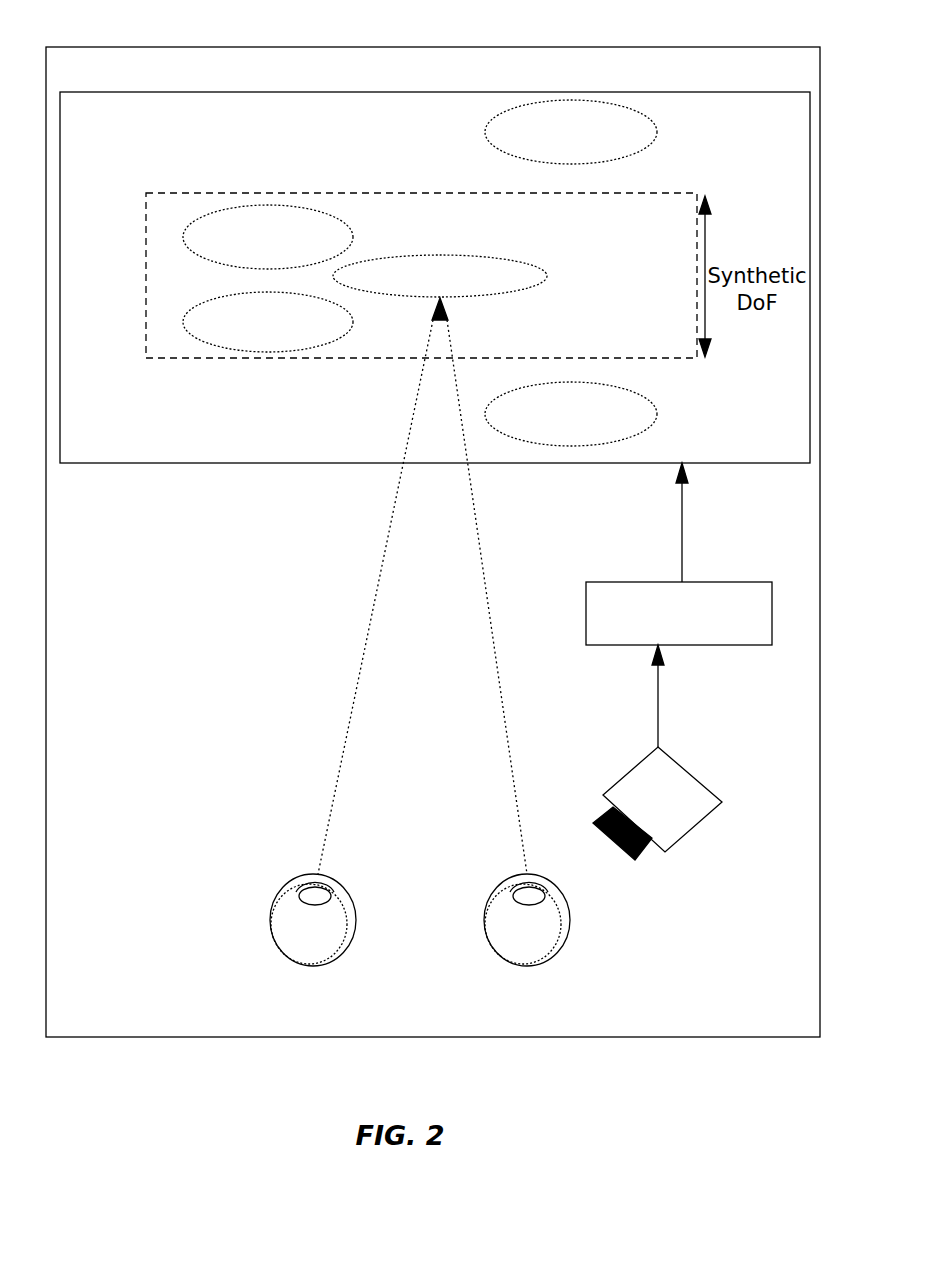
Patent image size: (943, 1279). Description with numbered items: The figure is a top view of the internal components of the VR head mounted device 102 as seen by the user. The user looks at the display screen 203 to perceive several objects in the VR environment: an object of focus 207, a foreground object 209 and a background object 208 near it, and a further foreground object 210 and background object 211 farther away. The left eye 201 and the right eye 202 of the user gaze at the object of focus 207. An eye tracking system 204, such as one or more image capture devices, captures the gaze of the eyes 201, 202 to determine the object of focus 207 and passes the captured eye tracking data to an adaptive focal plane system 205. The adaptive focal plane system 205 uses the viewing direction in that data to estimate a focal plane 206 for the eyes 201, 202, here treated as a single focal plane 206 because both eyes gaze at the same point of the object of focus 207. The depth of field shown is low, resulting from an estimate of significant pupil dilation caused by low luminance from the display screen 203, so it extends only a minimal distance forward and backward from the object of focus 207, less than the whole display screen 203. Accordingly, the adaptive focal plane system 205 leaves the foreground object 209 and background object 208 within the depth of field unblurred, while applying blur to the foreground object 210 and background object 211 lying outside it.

The VR head mounted device 102 is at (90, 47).
The display screen 203 is at (158, 92).
The focal plane 206 is at (197, 193).
The background object 211 is at (655, 136).
The background object 208 is at (353, 242).
The foreground object 209 is at (353, 330).
The object of focus 207 is at (498, 298).
The foreground object 210 is at (632, 390).
The adaptive focal plane system 205 is at (735, 582).
The eye tracking system 204 is at (692, 832).
The left eye 201 is at (300, 964).
The right eye 202 is at (512, 964).